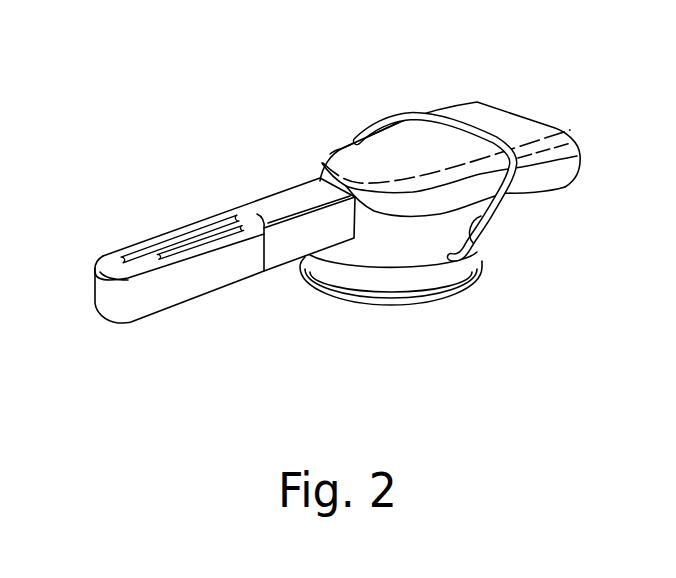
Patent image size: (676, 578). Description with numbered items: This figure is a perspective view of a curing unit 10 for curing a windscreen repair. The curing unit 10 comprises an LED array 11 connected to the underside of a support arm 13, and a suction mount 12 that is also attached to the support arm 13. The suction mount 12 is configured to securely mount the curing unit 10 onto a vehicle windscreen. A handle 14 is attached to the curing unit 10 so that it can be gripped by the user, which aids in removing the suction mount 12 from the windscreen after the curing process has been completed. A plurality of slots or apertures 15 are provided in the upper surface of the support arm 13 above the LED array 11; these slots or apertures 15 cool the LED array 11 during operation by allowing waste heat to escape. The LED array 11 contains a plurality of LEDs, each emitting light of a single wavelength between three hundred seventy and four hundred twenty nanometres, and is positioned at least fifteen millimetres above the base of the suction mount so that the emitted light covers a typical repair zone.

The curing unit 10 is at (158, 129).
The LED array 11 is at (210, 294).
The suction mount 12 is at (466, 280).
The support arm 13 is at (302, 198).
The handle 14 is at (413, 112).
The slots or apertures 15 is at (135, 252).